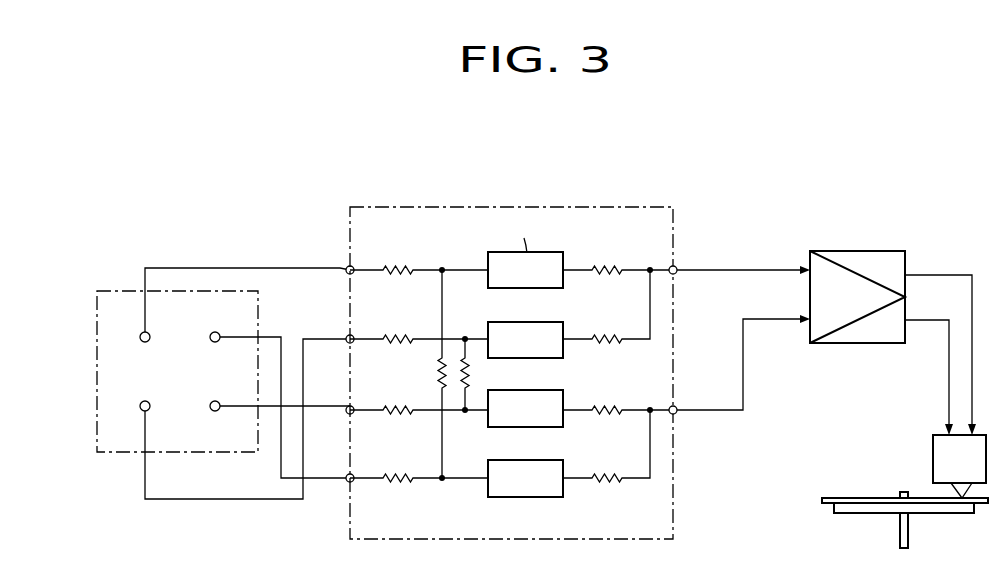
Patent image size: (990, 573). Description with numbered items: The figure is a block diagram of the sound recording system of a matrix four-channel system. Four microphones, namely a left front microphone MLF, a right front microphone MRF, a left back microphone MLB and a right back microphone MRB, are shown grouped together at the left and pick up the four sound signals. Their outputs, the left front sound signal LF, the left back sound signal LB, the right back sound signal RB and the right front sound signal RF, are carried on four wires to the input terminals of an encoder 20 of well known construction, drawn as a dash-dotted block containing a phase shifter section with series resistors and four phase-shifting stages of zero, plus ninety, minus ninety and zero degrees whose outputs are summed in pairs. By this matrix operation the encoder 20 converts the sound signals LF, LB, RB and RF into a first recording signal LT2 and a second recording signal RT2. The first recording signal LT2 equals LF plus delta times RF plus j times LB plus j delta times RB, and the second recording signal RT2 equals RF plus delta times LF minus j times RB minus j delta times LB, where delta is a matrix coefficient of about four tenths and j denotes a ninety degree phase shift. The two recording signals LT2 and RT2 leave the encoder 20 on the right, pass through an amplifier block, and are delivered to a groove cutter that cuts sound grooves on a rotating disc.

The encoder 20 is at (387, 216).
The left front sound signal LF is at (331, 258).
The left back sound signal LB is at (331, 326).
The right back sound signal RB is at (333, 399).
The right front sound signal RF is at (333, 465).
The first recording signal LT2 is at (822, 340).
The second recording signal RT2 is at (813, 364).
The left front microphone MLF is at (233, 318).
The right front microphone MRF is at (273, 405).
The left back microphone MLB is at (233, 419).
The right back microphone MRB is at (273, 392).